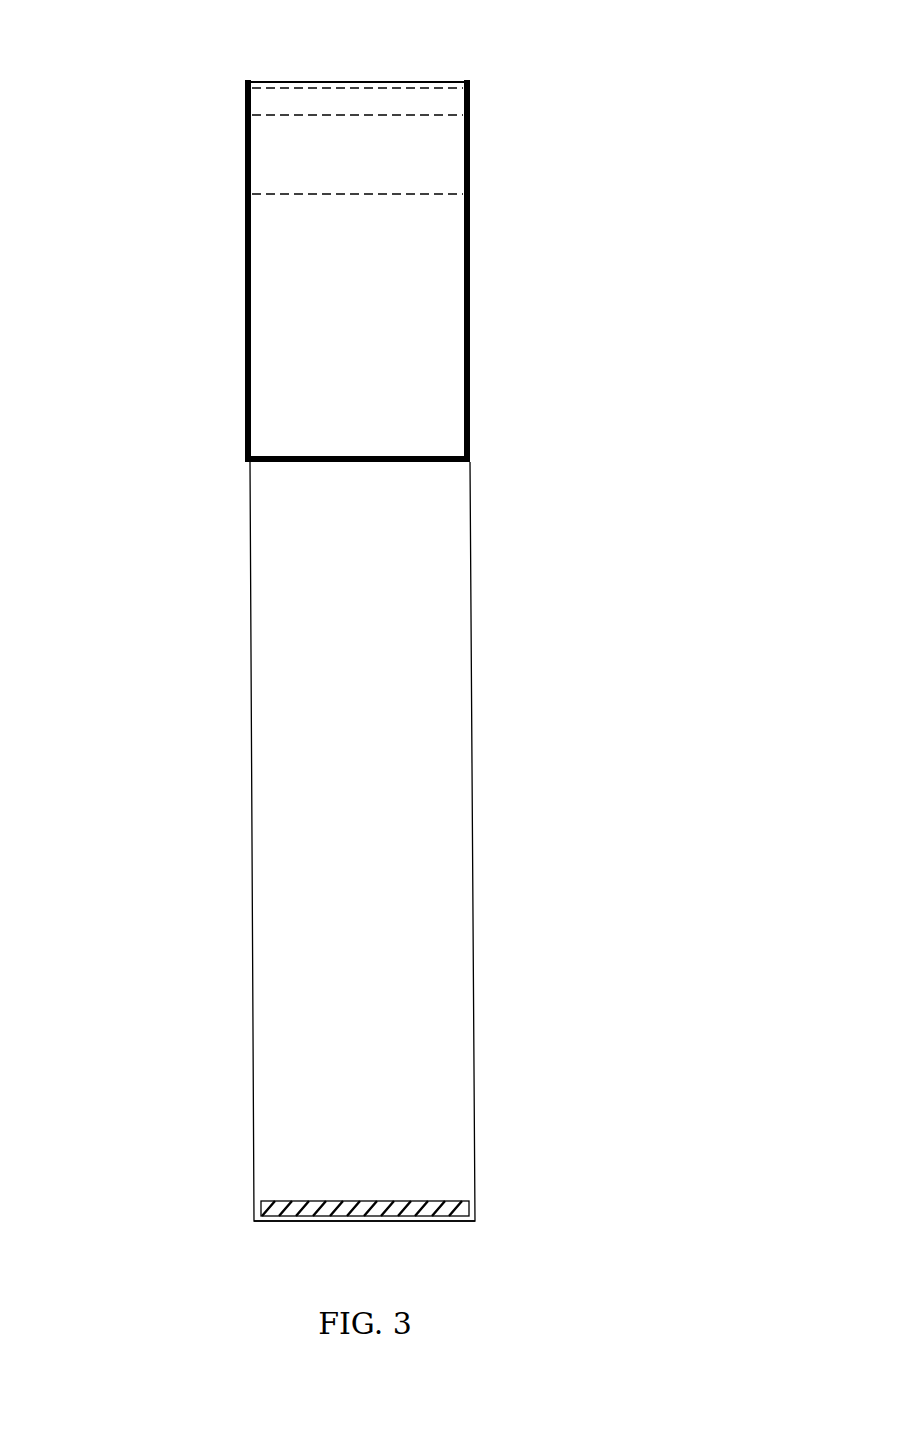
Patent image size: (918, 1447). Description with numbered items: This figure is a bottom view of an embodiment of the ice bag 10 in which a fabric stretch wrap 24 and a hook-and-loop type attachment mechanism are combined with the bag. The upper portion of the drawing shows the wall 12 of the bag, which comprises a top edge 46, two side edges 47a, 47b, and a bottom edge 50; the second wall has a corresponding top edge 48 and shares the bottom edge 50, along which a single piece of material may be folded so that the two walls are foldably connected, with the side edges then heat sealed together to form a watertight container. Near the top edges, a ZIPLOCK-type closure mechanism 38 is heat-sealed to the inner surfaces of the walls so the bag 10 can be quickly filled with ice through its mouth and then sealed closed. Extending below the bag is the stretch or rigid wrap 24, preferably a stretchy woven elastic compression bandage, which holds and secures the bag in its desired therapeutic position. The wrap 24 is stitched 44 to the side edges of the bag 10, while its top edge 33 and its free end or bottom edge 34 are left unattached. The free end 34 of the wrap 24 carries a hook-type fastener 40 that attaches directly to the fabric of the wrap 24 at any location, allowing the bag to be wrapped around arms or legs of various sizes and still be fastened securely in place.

The ice bag 10 is at (104, 66).
The first wall 12 is at (347, 324).
The wrap 24 is at (457, 652).
The top edge 33 is at (267, 195).
The free end 34 is at (403, 1223).
The closure mechanism 38 is at (267, 115).
The hook-type fastener 40 is at (470, 1208).
The stitching 44 is at (502, 193).
The top edge 46 is at (266, 82).
The side edge 47a is at (248, 102).
The side edge 47b is at (469, 102).
The top edge 48 is at (322, 88).
The bottom edge 50 is at (270, 465).